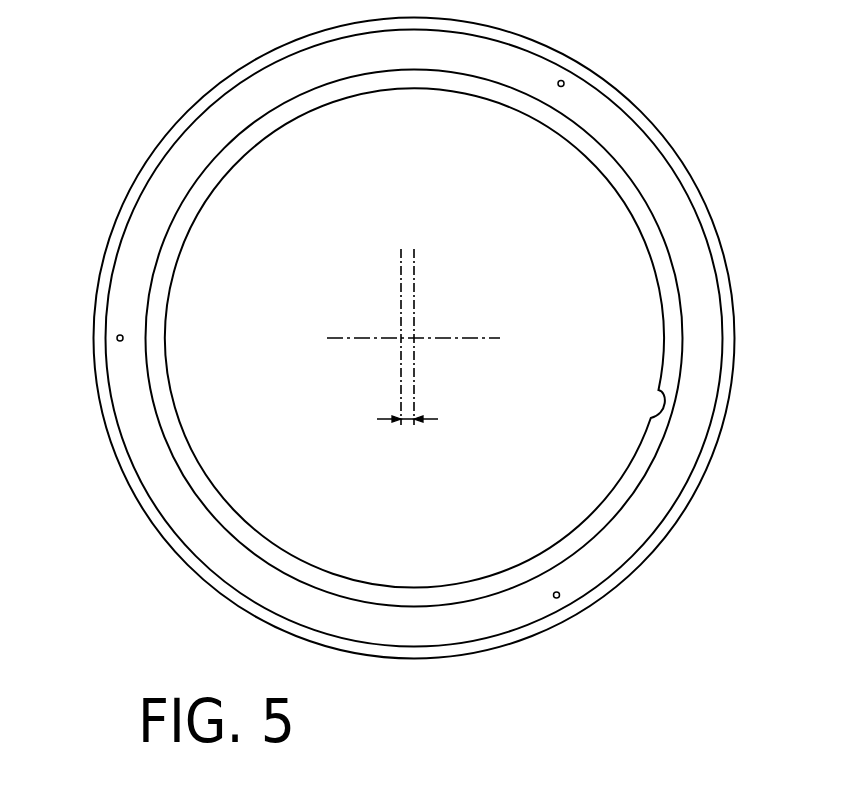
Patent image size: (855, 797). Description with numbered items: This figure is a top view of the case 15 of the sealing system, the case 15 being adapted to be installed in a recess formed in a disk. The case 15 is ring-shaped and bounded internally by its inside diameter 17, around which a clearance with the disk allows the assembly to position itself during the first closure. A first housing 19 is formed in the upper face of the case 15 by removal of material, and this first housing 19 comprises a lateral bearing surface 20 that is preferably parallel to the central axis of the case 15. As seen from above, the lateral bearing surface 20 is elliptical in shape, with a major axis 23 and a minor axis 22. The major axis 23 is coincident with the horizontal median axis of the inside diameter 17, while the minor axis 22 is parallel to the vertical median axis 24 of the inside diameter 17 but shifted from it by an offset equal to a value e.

The case 15 is at (401, 338).
The inside diameter 17 is at (612, 188).
The first housing 19 is at (642, 127).
The lateral bearing surface 20 is at (684, 163).
The minor axis 22 is at (415, 253).
The major axis 23 is at (337, 338).
The vertical median axis 24 is at (401, 253).
The offset value e is at (385, 419).